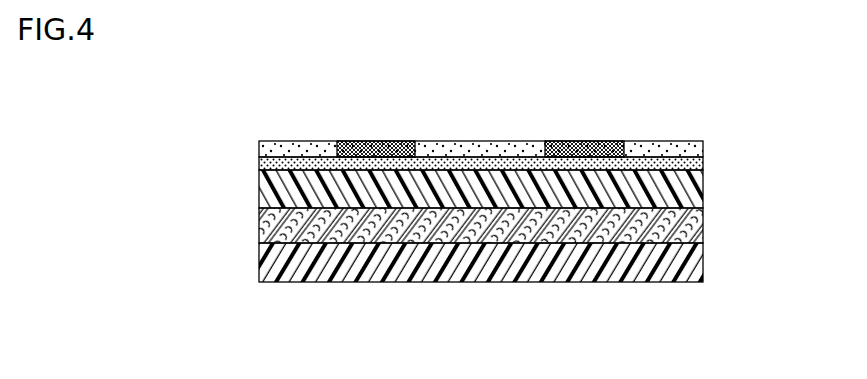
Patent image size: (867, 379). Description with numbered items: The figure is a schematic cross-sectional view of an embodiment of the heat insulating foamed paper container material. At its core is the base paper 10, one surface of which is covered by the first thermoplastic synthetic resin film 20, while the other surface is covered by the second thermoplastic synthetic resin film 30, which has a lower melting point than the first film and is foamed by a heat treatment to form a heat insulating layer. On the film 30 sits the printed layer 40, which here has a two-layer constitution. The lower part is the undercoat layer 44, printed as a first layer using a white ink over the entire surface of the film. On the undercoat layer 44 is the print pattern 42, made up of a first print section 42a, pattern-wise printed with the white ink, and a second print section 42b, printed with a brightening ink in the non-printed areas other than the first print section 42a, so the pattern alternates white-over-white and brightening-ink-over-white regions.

The base paper 10 is at (704, 227).
The first thermoplastic synthetic resin film 20 is at (704, 267).
The second thermoplastic synthetic resin film 30 is at (704, 183).
The printed layer 40 is at (524, 115).
The print pattern 42 is at (501, 108).
The first print section 42a is at (612, 140).
The second print section 42b is at (637, 140).
The undercoat layer 44 is at (704, 163).